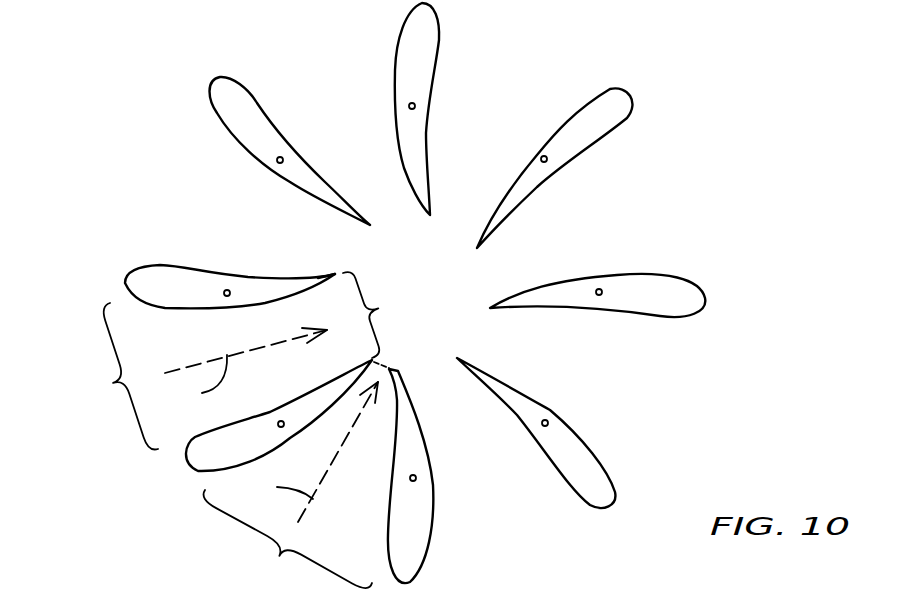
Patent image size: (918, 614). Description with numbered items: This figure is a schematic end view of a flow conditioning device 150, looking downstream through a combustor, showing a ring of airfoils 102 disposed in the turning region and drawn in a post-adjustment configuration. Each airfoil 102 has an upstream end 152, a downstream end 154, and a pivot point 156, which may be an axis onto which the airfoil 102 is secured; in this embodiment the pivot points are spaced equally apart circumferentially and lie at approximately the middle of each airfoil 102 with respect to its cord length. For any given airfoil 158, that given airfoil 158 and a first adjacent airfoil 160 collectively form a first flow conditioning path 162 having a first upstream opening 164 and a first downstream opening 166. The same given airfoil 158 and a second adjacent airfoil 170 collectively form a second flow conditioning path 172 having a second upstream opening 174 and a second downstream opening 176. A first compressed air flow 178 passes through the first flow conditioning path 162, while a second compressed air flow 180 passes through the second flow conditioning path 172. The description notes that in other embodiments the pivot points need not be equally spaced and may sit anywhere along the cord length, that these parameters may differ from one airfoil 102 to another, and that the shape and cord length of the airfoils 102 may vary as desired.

The airfoil 102 is at (605, 461).
The flow conditioning device 150 is at (587, 36).
The upstream end 152 is at (215, 83).
The downstream end 154 is at (337, 274).
The pivot point 156 is at (548, 420).
The given airfoil 158 is at (325, 387).
The first adjacent airfoil 160 is at (178, 267).
The first flow conditioning path 162 is at (203, 348).
The first upstream opening 164 is at (113, 383).
The first downstream opening 166 is at (378, 308).
The second adjacent airfoil 170 is at (430, 517).
The second flow conditioning path 172 is at (377, 505).
The second upstream opening 174 is at (278, 556).
The second downstream opening 176 is at (388, 358).
The first compressed air flow 178 is at (193, 384).
The second compressed air flow 180 is at (275, 487).